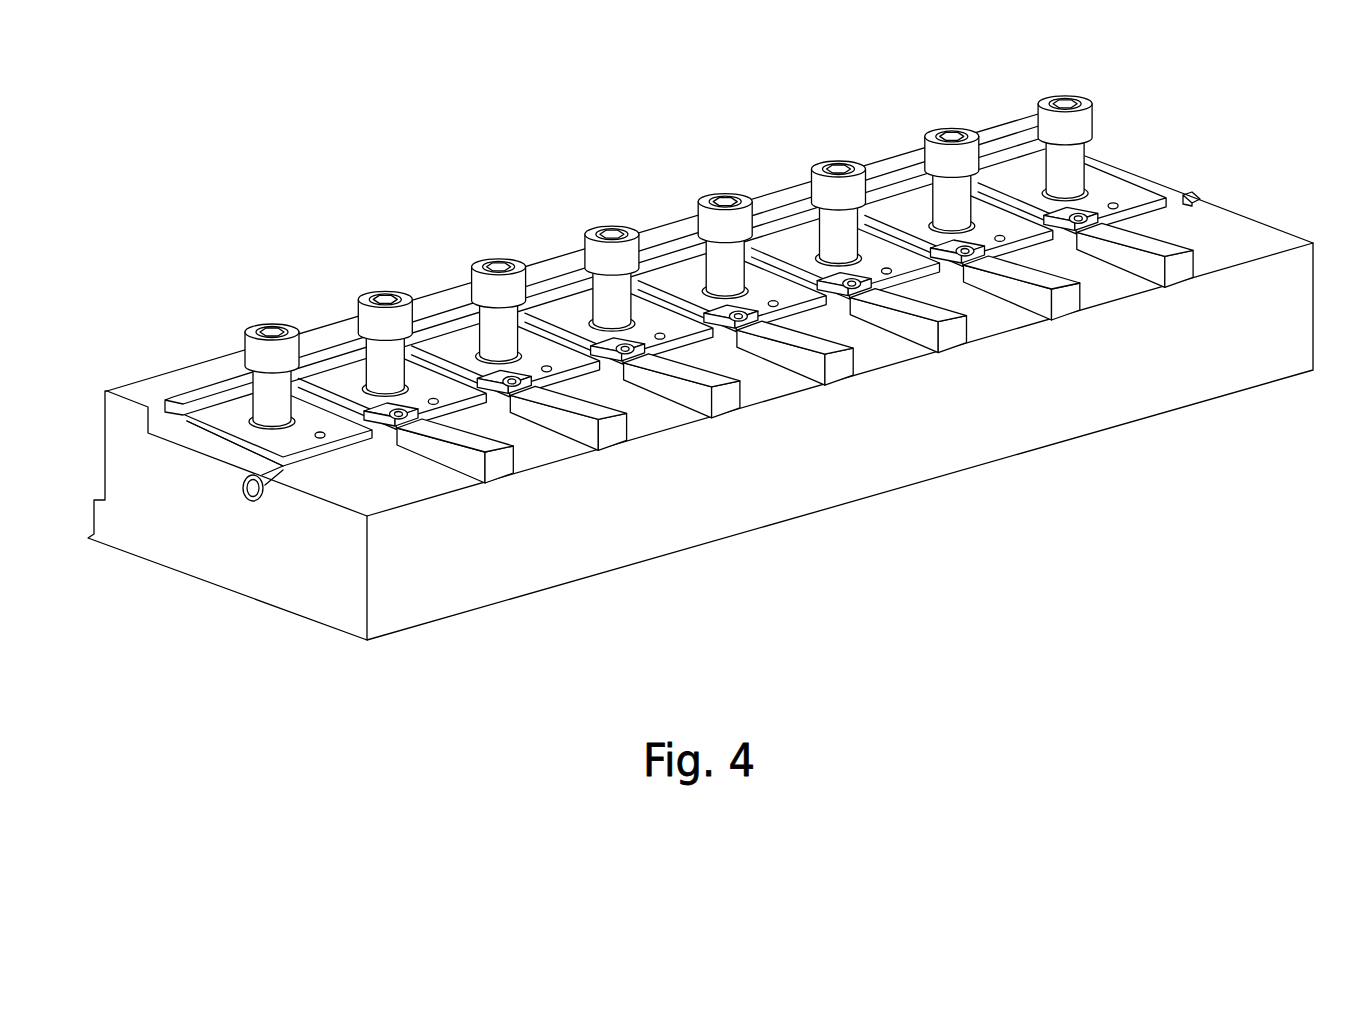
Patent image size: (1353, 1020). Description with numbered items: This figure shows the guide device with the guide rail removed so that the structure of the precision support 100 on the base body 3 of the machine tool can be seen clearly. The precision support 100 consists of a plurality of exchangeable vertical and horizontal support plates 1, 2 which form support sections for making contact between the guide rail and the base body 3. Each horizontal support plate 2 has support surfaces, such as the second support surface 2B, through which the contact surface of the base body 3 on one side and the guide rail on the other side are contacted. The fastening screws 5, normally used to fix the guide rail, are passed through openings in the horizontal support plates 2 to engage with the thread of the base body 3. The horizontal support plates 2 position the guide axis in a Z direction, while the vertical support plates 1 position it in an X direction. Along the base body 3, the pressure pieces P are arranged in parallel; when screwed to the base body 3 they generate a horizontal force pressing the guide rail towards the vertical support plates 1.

The precision support 100 is at (700, 402).
The vertical support plate 1 is at (203, 400).
The horizontal support plate 2 is at (252, 447).
The second support surface 2B is at (243, 430).
The base body 3 is at (338, 545).
The fastening screw 5 is at (257, 350).
The pressure piece P is at (397, 430).